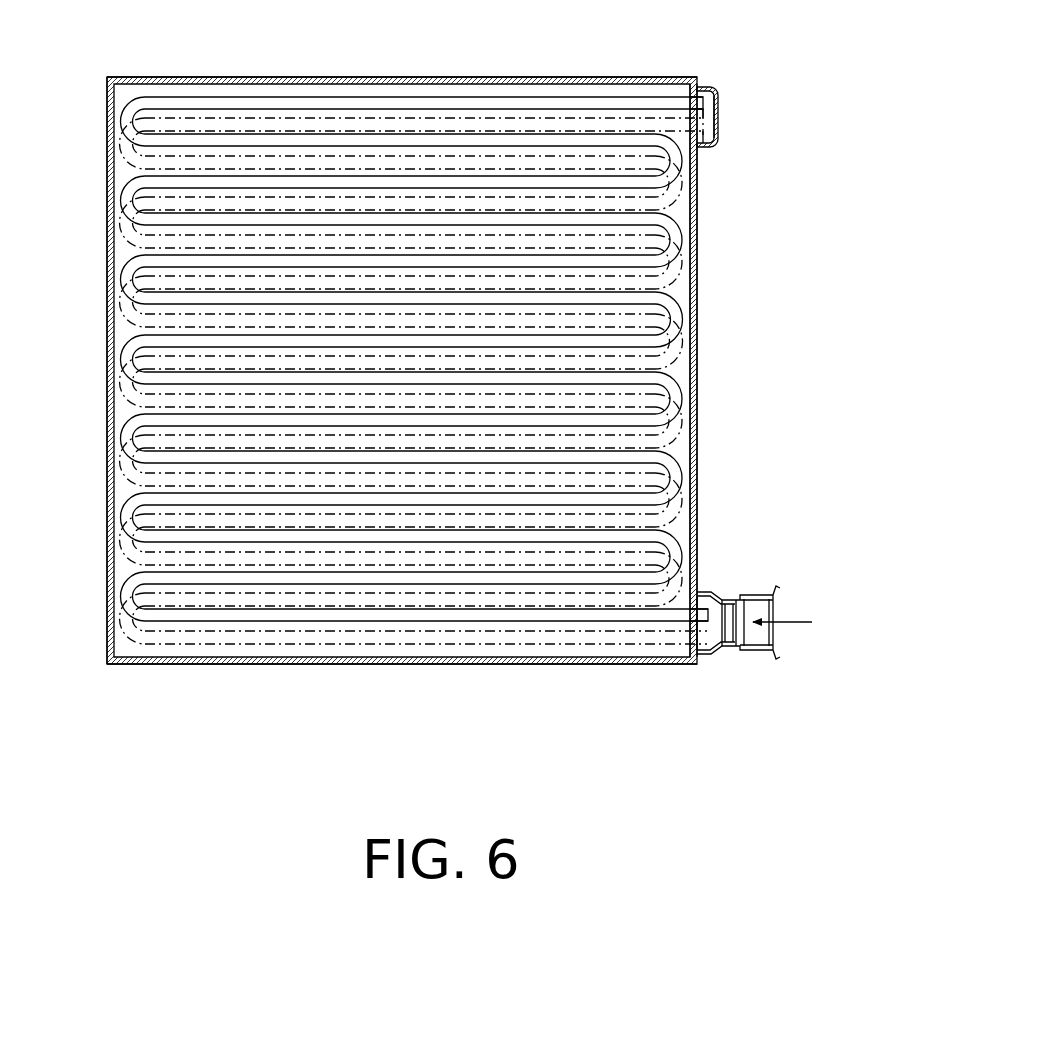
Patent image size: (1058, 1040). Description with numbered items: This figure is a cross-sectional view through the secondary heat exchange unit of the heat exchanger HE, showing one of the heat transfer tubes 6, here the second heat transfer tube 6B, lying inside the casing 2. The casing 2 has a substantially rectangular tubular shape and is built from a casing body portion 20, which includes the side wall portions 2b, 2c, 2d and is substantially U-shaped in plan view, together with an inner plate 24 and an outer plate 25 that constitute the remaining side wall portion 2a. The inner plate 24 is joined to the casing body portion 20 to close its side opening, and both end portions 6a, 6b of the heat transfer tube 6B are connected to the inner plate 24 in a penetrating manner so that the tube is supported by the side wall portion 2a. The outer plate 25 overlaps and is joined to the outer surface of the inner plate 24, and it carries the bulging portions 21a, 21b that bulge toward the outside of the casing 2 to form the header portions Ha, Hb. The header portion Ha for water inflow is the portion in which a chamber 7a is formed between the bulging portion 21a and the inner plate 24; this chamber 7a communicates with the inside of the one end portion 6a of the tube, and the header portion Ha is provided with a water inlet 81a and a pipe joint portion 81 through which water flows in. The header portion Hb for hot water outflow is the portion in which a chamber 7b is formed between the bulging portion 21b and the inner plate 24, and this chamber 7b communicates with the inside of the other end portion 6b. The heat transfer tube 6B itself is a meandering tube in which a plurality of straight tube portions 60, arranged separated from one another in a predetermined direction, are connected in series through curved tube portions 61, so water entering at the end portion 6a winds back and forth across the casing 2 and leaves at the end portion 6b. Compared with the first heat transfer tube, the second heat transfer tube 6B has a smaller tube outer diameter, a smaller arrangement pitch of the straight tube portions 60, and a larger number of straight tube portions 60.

The heat exchanger HE is at (108, 70).
The casing 2 is at (192, 75).
The casing body portion 20 is at (233, 77).
The side wall portion 2a is at (745, 185).
The side wall portion 2b is at (400, 76).
The side wall portion 2c is at (107, 226).
The side wall portion 2d is at (287, 664).
The inner plate 24 is at (691, 185).
The outer plate 25 is at (694, 212).
The heat transfer tube 6 is at (538, 122).
The second heat transfer tube 6B is at (452, 93).
The one end portion 6a is at (706, 606).
The other end portion 6b is at (702, 92).
The straight tube portion 60 is at (282, 103).
The curved tube portion 61 is at (127, 117).
The bulging portion 21a is at (714, 592).
The bulging portion 21b is at (719, 100).
The chamber 7a is at (716, 632).
The chamber 7b is at (716, 120).
The header portion Ha is at (725, 590).
The header portion Hb is at (722, 141).
The pipe joint portion 81 is at (773, 592).
The water inlet 81a is at (764, 631).